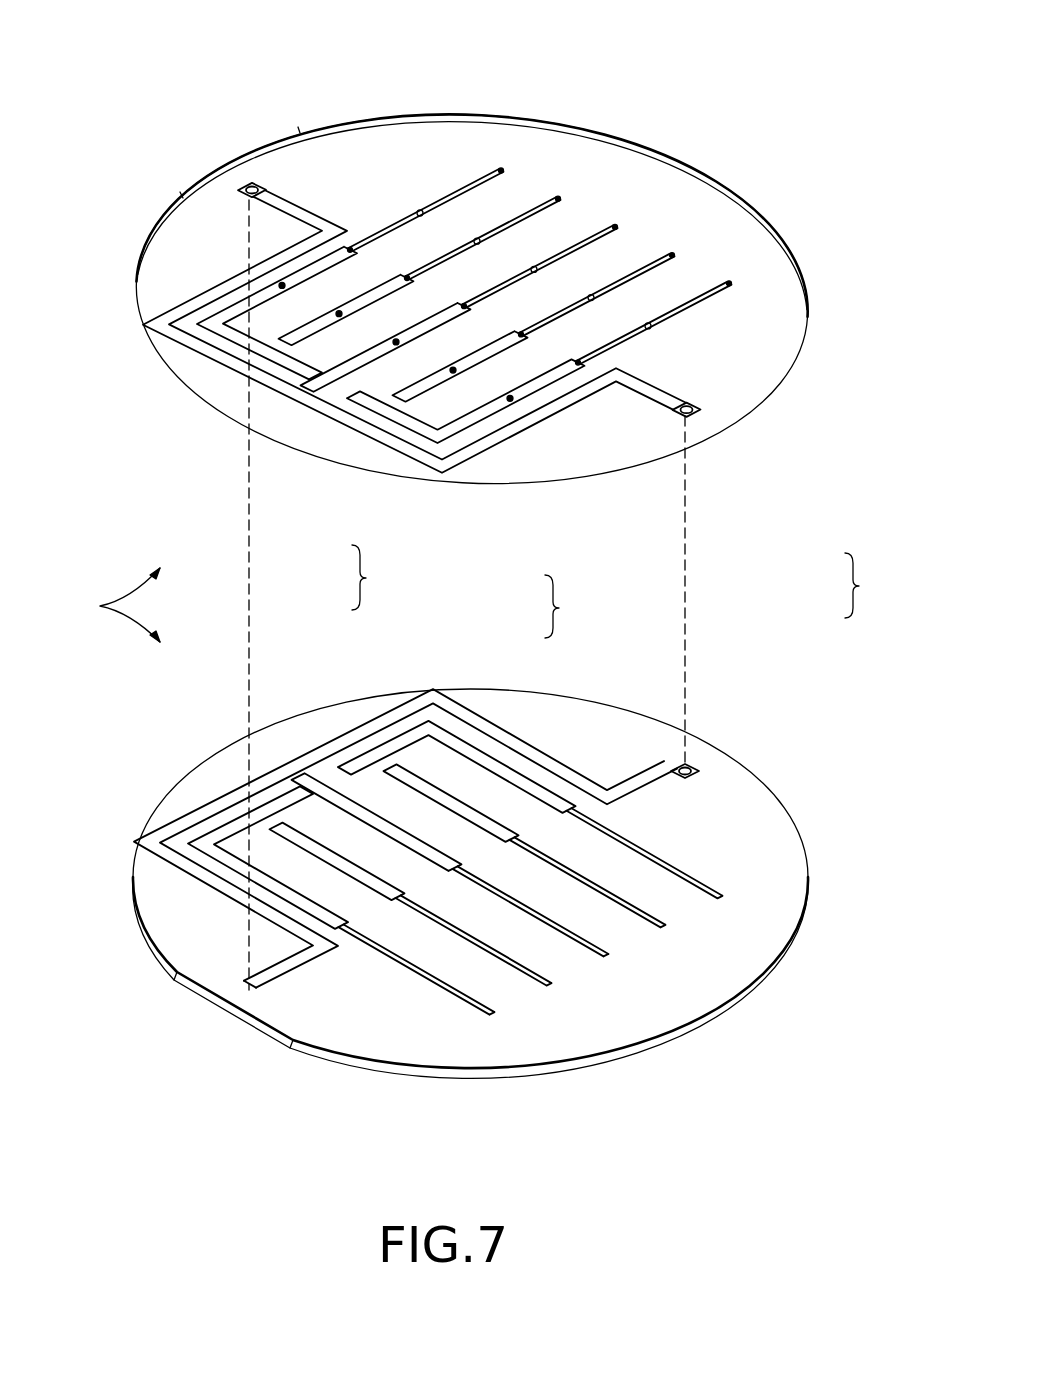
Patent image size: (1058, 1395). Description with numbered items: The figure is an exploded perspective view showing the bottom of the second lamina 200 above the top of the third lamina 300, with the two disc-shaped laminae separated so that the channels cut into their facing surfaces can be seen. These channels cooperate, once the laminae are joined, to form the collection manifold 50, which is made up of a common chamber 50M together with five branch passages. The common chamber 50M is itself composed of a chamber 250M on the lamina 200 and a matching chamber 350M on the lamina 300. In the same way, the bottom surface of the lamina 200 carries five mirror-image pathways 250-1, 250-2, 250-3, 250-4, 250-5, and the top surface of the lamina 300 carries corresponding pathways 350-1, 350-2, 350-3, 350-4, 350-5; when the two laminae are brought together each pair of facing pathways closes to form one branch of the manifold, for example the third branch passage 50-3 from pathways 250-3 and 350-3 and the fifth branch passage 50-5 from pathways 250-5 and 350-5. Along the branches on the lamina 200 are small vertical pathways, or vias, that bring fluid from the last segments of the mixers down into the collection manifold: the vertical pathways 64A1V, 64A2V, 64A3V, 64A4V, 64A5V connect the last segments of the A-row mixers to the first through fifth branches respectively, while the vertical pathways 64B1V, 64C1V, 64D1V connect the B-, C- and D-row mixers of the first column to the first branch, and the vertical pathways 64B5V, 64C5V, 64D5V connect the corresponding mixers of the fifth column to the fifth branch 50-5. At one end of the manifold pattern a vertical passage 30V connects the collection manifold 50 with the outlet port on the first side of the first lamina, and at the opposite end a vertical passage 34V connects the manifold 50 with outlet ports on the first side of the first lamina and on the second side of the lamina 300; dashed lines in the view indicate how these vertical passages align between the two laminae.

The second lamina 200 is at (136, 290).
The third lamina 300 is at (134, 886).
The chamber 250M is at (267, 360).
The chamber 350M is at (266, 845).
The common chamber 50M is at (384, 577).
The pathway 250-1 is at (500, 171).
The pathway 250-2 is at (558, 199).
The pathway 250-3 is at (615, 227).
The pathway 250-4 is at (672, 255).
The pathway 250-5 is at (727, 292).
The pathway 350-1 is at (490, 1018).
The pathway 350-2 is at (547, 990).
The pathway 350-3 is at (604, 962).
The pathway 350-4 is at (664, 934).
The pathway 350-5 is at (720, 890).
The branch passage 50-3 is at (580, 606).
The branch passage 50-5 is at (879, 585).
The collection manifold 50 is at (111, 605).
The vertical passage 30V is at (239, 189).
The vertical passage 34V is at (680, 408).
The vertical pathway 64A1V is at (282, 285).
The vertical pathway 64A2V is at (339, 314).
The vertical pathway 64A3V is at (396, 343).
The vertical pathway 64A4V is at (453, 371).
The vertical pathway 64A5V is at (510, 398).
The vertical pathway 64B1V is at (350, 249).
The vertical pathway 64B5V is at (580, 360).
The vertical pathway 64C1V is at (420, 212).
The vertical pathway 64C5V is at (650, 325).
The vertical pathway 64D1V is at (502, 170).
The vertical pathway 64D5V is at (730, 283).